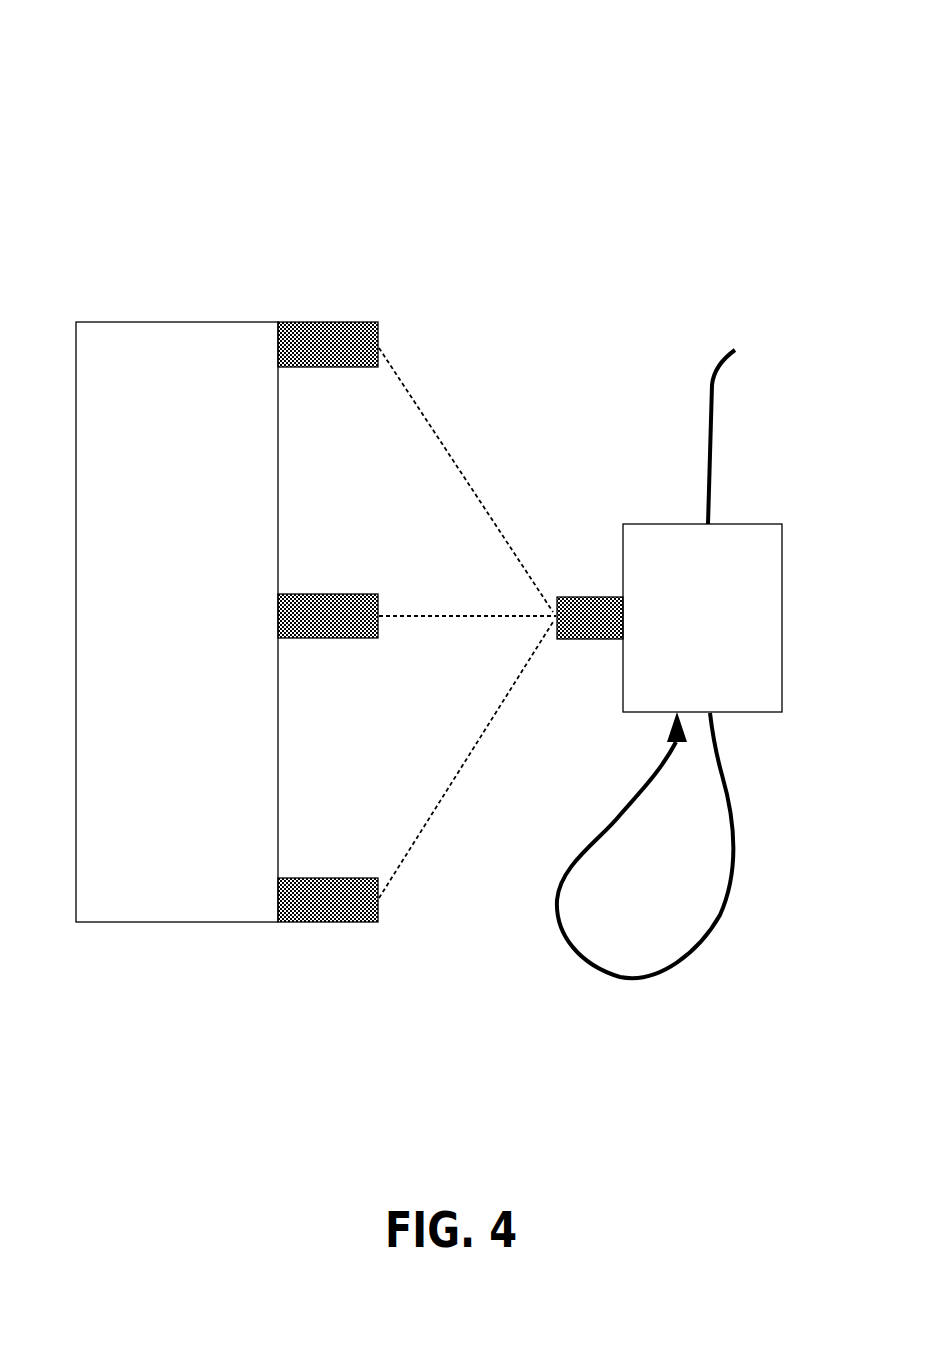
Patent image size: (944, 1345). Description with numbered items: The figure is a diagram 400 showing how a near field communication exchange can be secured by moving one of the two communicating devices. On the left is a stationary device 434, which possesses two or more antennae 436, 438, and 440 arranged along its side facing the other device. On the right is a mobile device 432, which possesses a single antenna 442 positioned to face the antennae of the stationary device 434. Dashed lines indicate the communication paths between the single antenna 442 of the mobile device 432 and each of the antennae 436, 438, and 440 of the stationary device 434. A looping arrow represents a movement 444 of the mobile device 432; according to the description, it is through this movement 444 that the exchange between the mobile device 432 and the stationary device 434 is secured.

The diagram 400 is at (705, 63).
The mobile device 432 is at (765, 508).
The stationary device 434 is at (127, 310).
The antenna 436 is at (363, 293).
The antenna 438 is at (365, 578).
The antenna 440 is at (318, 862).
The single antenna 442 is at (550, 657).
The movement 444 is at (713, 962).